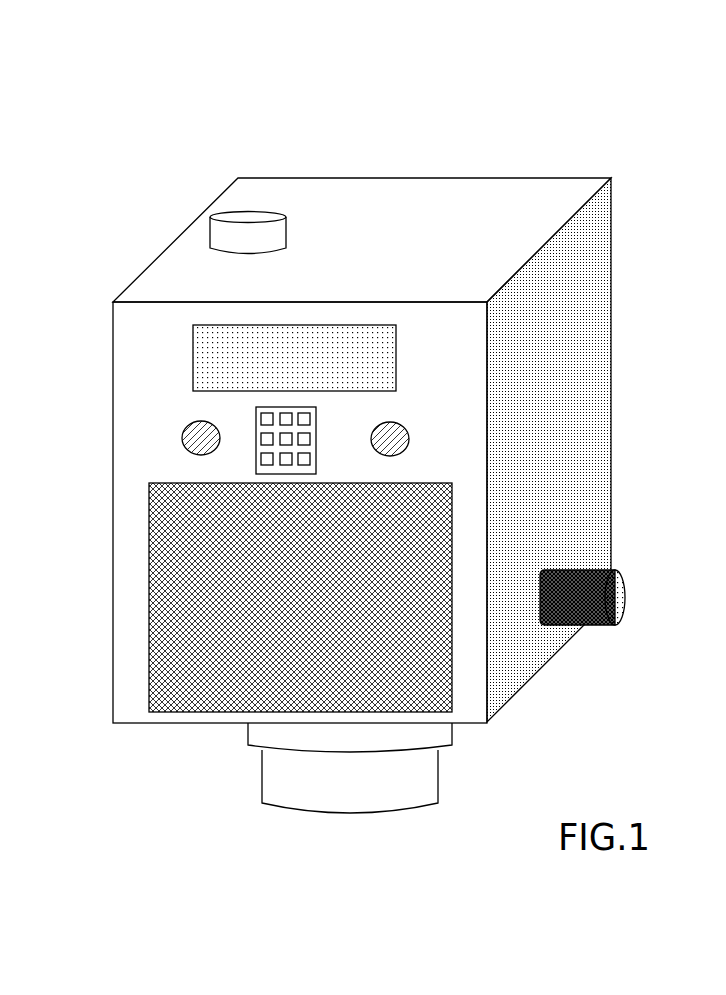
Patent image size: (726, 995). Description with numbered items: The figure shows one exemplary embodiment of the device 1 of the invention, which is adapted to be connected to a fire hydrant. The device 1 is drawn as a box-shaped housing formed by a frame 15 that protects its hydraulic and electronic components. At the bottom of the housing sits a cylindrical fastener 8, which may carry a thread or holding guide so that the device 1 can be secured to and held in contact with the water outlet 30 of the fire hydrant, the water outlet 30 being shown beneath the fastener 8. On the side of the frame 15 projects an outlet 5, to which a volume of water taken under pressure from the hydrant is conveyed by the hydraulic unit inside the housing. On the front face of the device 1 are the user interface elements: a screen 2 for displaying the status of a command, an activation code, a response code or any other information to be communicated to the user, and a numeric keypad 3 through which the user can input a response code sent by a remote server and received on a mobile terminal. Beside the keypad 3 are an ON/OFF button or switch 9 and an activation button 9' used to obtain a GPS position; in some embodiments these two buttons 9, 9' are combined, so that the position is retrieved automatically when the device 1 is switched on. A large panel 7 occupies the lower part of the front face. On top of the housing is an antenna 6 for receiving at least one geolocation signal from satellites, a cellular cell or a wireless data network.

The device 1 is at (394, 156).
The screen 2 is at (222, 348).
The numeric keypad 3 is at (317, 430).
The outlet 5 is at (623, 592).
The antenna 6 is at (227, 238).
The front panel 7 is at (205, 693).
The fastener 8 is at (443, 735).
The ON/OFF button or switch 9 is at (172, 448).
The activation button 9' is at (425, 427).
The frame 15 is at (610, 292).
The water outlet 30 is at (360, 797).